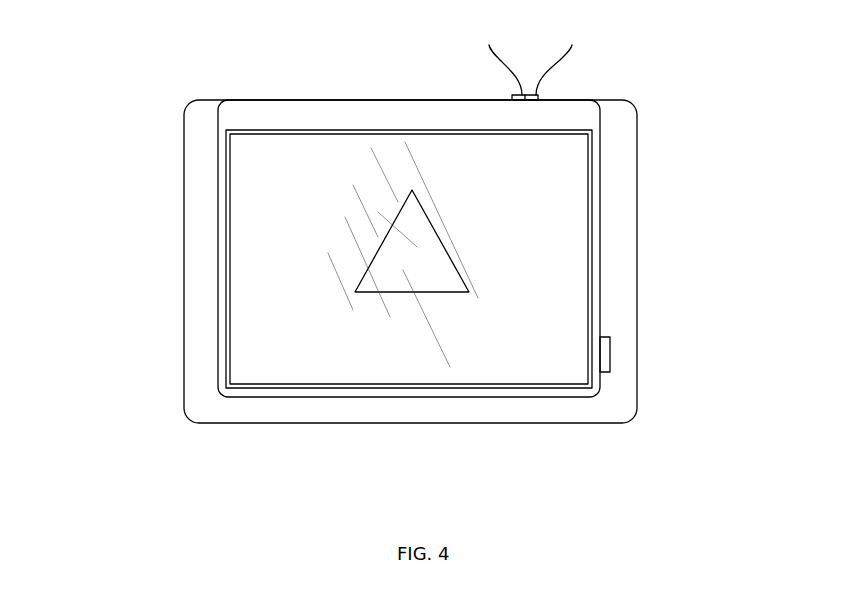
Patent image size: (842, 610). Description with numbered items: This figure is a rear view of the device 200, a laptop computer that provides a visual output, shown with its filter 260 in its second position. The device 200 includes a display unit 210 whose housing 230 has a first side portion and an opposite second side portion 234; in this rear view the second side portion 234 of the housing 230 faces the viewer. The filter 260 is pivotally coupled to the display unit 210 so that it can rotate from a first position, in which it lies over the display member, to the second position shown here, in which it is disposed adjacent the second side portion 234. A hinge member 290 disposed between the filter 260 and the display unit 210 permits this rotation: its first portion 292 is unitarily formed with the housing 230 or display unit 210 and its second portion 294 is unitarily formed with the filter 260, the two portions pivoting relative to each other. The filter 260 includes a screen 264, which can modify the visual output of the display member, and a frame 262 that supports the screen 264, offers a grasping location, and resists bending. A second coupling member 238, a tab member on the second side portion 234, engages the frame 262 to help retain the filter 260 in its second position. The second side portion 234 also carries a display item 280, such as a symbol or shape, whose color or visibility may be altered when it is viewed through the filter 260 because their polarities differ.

The device 200 is at (175, 40).
The display unit 210 is at (140, 186).
The housing 230 is at (166, 277).
The second side portion 234 is at (194, 373).
The second coupling member 238 is at (611, 354).
The filter 260 is at (563, 227).
The frame 262 is at (601, 293).
The screen 264 is at (554, 153).
The display item 280 is at (433, 242).
The hinge member 290 is at (600, 58).
The first portion 292 is at (557, 55).
The second portion 294 is at (513, 53).